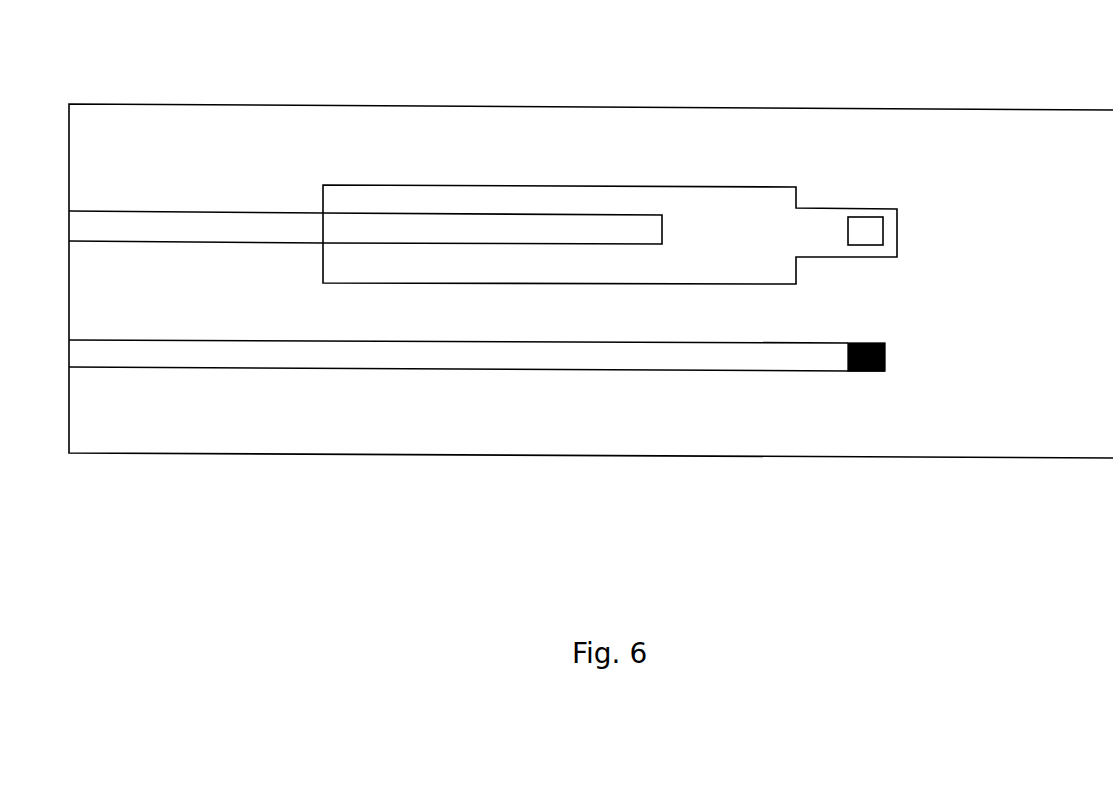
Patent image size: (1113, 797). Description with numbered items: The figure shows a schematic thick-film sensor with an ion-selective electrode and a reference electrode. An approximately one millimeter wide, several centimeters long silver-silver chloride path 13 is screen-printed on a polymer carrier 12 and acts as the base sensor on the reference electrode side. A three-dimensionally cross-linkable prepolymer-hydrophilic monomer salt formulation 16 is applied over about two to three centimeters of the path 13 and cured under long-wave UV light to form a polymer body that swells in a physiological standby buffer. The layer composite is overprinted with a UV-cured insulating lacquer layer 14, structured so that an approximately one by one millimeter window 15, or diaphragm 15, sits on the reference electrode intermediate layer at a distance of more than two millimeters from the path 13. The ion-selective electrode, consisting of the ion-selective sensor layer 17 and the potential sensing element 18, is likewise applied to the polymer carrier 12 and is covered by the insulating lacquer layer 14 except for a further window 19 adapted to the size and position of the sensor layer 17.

The polymer carrier 12 is at (830, 457).
The silver-silver chloride path 13 is at (278, 225).
The insulating lacquer layer 14 is at (442, 431).
The window 15 is at (873, 217).
The cross-linkable prepolymer-hydrophilic monomer salt formulation 16 is at (734, 205).
The ion-selective sensor layer 17 is at (886, 353).
The potential sensing element 18 is at (295, 357).
The further window 19 is at (863, 372).